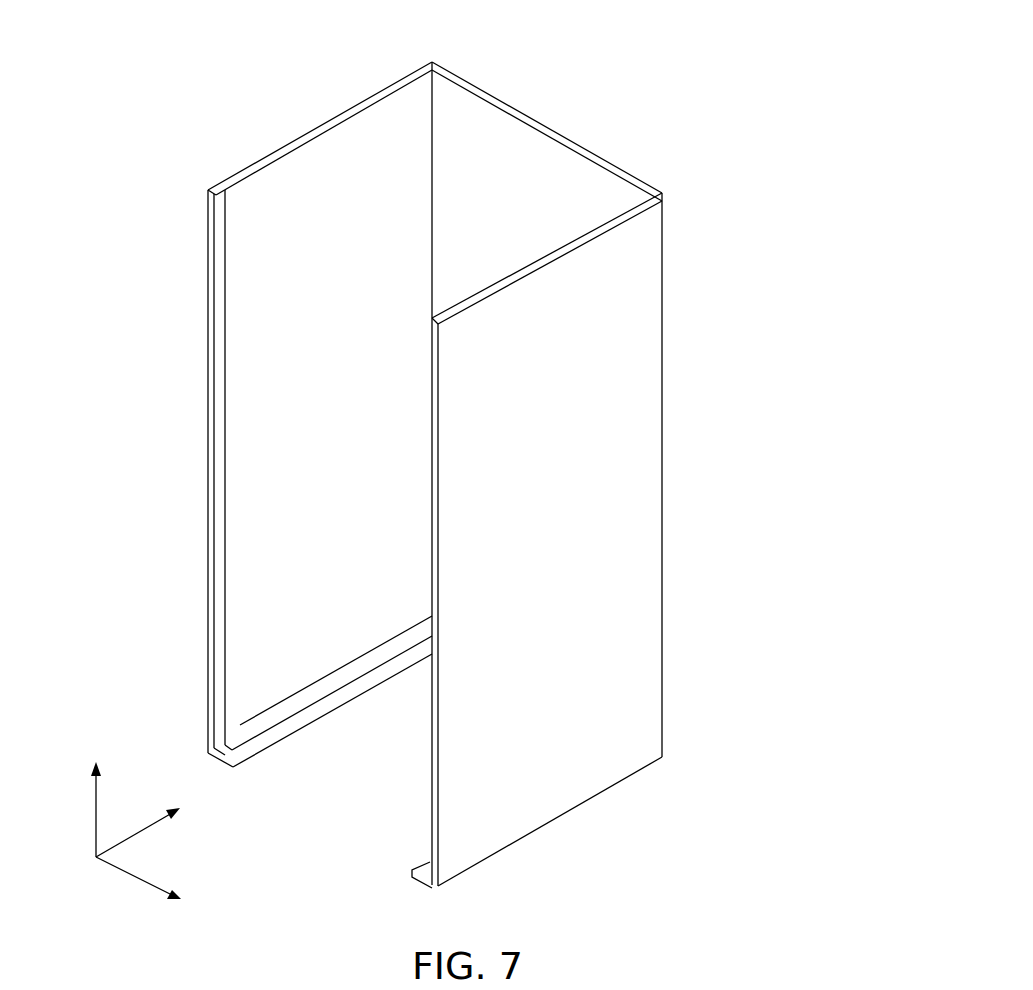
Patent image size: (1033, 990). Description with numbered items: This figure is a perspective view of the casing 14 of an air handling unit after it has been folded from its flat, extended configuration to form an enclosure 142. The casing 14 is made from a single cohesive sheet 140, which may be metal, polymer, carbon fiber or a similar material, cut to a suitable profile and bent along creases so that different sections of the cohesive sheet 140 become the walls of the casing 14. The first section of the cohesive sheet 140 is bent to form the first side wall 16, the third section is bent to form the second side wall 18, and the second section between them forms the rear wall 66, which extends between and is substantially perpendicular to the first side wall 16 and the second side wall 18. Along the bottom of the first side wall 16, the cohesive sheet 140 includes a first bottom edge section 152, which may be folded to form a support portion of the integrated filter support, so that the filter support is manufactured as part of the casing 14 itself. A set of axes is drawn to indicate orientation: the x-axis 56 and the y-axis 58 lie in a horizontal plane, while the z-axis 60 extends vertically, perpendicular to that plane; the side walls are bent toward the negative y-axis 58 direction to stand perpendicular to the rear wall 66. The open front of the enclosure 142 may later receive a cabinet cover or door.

The casing 14 is at (486, 56).
The first side wall 16 is at (312, 176).
The second side wall 18 is at (631, 408).
The rear wall 66 is at (520, 162).
The cohesive sheet 140 is at (631, 332).
The enclosure 142 is at (597, 107).
The first bottom edge section 152 is at (318, 730).
The x-axis 56 is at (130, 877).
The y-axis 58 is at (135, 835).
The z-axis 60 is at (96, 818).